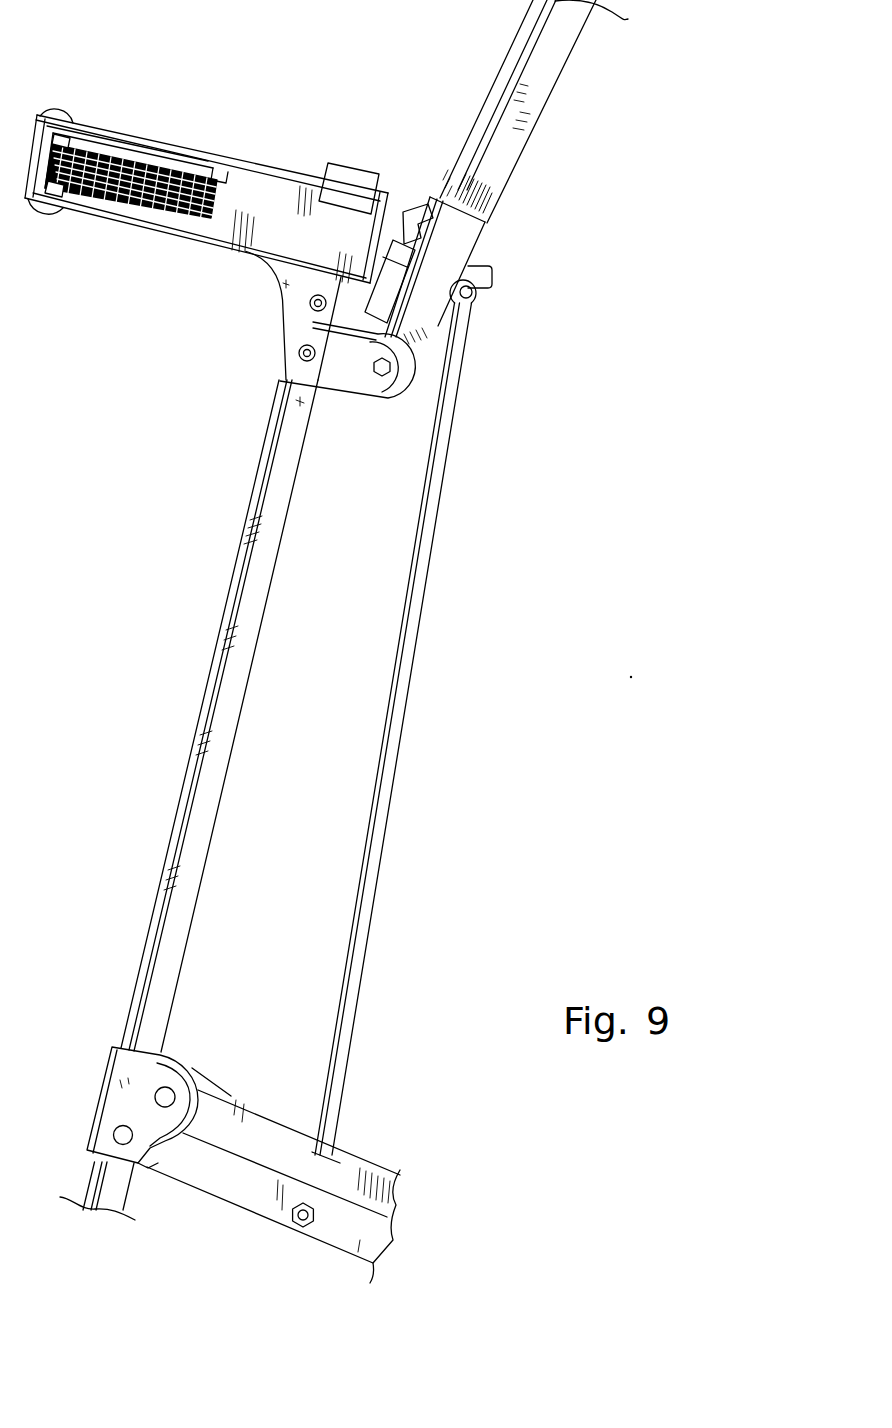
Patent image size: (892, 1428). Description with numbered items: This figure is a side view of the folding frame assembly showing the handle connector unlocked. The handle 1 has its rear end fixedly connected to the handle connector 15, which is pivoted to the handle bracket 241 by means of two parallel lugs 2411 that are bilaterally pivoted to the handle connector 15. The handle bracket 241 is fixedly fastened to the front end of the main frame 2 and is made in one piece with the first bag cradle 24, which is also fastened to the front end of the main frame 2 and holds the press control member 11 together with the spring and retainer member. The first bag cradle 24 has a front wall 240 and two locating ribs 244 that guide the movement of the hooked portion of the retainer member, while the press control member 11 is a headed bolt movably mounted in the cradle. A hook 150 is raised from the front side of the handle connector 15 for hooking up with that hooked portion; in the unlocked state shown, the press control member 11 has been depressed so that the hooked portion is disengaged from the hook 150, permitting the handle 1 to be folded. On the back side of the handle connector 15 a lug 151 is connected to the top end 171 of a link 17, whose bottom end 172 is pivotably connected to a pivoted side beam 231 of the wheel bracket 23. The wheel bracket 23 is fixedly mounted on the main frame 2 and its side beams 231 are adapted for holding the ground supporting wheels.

The handle 1 is at (530, 140).
The main frame 2 is at (204, 710).
The press control member 11 is at (358, 163).
The handle connector 15 is at (478, 240).
The links 17 is at (400, 741).
The wheel bracket 23 is at (107, 1077).
The first bag cradle 24 is at (37, 137).
The hook 150 is at (406, 232).
The lug 151 is at (491, 272).
The top ends 171 is at (478, 292).
The bottom ends 172 is at (323, 1190).
The pivoted side beams 231 is at (250, 1207).
The front wall 240 is at (286, 168).
The handle bracket 241 is at (329, 398).
The locating ribs 244 is at (380, 217).
The parallel lugs 2411 is at (391, 388).